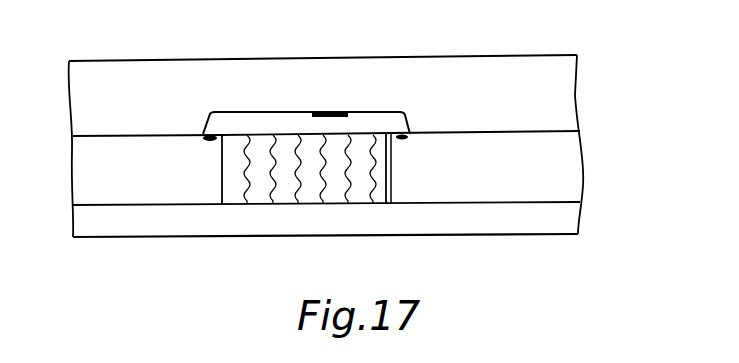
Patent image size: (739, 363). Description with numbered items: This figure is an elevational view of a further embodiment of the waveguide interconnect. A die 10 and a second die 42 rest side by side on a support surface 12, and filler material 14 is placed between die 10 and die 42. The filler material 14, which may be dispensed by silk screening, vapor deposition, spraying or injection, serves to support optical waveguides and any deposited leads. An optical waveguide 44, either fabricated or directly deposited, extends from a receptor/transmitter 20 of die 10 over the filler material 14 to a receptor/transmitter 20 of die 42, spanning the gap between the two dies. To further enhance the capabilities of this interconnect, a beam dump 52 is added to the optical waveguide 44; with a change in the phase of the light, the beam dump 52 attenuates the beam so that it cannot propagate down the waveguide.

The die 10 is at (158, 181).
The support surface 12 is at (577, 222).
The filler material 14 is at (287, 195).
The receptor/transmitter 20 is at (396, 137).
The second die 42 is at (504, 183).
The optical waveguide 44 is at (268, 113).
The beam dump 52 is at (332, 111).